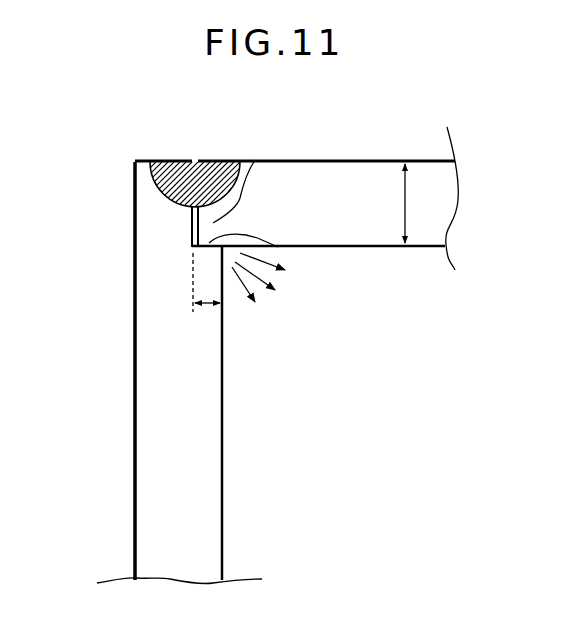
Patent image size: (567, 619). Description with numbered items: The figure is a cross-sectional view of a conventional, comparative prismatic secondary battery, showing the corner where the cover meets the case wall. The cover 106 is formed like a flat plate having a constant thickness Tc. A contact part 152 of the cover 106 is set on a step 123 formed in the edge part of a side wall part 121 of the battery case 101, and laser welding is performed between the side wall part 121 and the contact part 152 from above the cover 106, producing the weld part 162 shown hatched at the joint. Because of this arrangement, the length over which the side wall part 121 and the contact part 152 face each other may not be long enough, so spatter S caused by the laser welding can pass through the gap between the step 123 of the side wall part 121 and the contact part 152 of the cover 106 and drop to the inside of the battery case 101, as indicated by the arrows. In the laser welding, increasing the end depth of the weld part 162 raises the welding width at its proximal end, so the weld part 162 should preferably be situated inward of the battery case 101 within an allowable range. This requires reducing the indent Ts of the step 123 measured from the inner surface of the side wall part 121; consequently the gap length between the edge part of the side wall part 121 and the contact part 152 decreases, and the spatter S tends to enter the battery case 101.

The battery case 101 is at (125, 438).
The side wall part 121 is at (150, 367).
The cover 106 is at (355, 177).
The weld part 162 is at (224, 158).
The contact part 152 is at (255, 160).
The step 123 is at (262, 244).
The spatter S is at (255, 277).
The indent of the step Ts is at (206, 294).
The thickness of the cover Tc is at (416, 203).